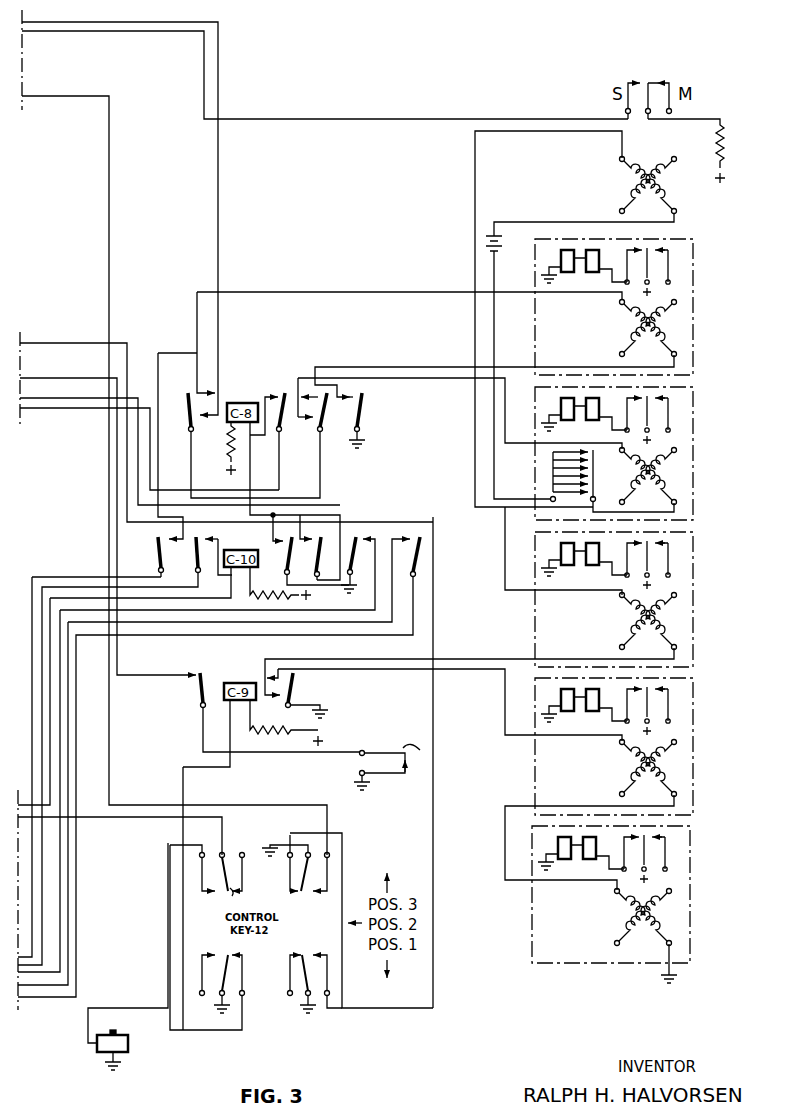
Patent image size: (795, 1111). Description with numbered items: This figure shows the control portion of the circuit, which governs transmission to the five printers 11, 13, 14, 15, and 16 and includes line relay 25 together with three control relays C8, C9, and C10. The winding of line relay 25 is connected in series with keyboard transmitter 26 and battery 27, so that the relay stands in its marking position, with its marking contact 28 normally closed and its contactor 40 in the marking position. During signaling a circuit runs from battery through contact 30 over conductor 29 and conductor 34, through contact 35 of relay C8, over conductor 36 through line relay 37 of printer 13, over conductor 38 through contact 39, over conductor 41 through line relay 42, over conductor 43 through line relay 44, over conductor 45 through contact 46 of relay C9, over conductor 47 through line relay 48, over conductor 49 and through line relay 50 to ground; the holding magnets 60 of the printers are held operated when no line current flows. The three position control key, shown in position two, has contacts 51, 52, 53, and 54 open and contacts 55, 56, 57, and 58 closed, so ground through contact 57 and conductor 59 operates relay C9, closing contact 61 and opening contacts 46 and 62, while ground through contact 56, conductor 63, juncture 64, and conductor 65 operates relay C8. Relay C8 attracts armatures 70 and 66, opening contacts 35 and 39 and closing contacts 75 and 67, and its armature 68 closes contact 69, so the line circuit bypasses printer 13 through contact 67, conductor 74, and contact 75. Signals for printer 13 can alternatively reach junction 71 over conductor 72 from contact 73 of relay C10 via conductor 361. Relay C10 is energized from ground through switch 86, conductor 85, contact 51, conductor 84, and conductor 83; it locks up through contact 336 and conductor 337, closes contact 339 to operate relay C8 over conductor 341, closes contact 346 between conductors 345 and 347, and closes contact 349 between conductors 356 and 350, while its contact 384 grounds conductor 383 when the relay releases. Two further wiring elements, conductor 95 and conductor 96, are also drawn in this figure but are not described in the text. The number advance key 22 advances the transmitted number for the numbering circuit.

The printer 11 is at (684, 416).
The printer 13 is at (693, 340).
The printer 14 is at (684, 736).
The printer 15 is at (684, 868).
The printer 16 is at (684, 628).
The number advance key 22 is at (412, 762).
The line relay 25 is at (621, 185).
The keyboard transmitter 26 is at (595, 474).
The battery 27 is at (484, 241).
The marking contact 28 is at (659, 88).
The conductor 29 is at (413, 117).
The contact 30 is at (644, 80).
The conductor 34 is at (219, 185).
The contact 35 is at (212, 388).
The conductor 36 is at (346, 294).
The line relay 37 is at (640, 334).
The conductor 38 is at (428, 363).
The contact 39 is at (296, 392).
The contactor 40 is at (672, 112).
The conductor 41 is at (446, 380).
The line relay 42 is at (640, 476).
The conductor 43 is at (505, 562).
The line relay 44 is at (638, 616).
The conductor 45 is at (515, 658).
The contact 46 is at (263, 665).
The conductor 47 is at (400, 668).
The line relay 48 is at (640, 764).
The conductor 49 is at (505, 866).
The line relay 50 is at (637, 912).
The contact 51 is at (220, 893).
The contact 52 is at (308, 893).
The contact 53 is at (230, 952).
The contact 54 is at (310, 953).
The contact 55 is at (232, 893).
The contact 56 is at (300, 892).
The contact 57 is at (233, 956).
The contact 58 is at (298, 960).
The conductor 59 is at (205, 1032).
The holding magnet 60 is at (597, 274).
The contact 61 is at (287, 706).
The contact 62 is at (199, 672).
The conductor 63 is at (343, 866).
The juncture 64 is at (340, 1010).
The conductor 65 is at (433, 950).
The armature 66 is at (323, 440).
The contact 67 is at (292, 447).
The armature 68 is at (372, 420).
The contact 69 is at (366, 400).
The armature 70 is at (189, 392).
The junction 71 is at (196, 350).
The conductor 72 is at (156, 370).
The contact 73 is at (160, 538).
The conductor 74 is at (322, 482).
The contact 75 is at (194, 433).
The conductor 83 is at (50, 667).
The conductor 84 is at (140, 819).
The conductor 85 is at (168, 950).
The switch 86 is at (128, 1045).
The conductor 95 is at (320, 756).
The conductor 96 is at (118, 650).
The contact 336 is at (206, 538).
The conductor 337 is at (50, 577).
The contact 339 is at (288, 548).
The conductor 341 is at (252, 467).
The conductor 345 is at (98, 342).
The contact 346 is at (318, 544).
The conductor 347 is at (90, 400).
The contact 349 is at (428, 538).
The conductor 350 is at (342, 636).
The conductor 356 is at (68, 910).
The conductor 361 is at (32, 898).
The conductor 383 is at (60, 963).
The contact 384 is at (360, 538).